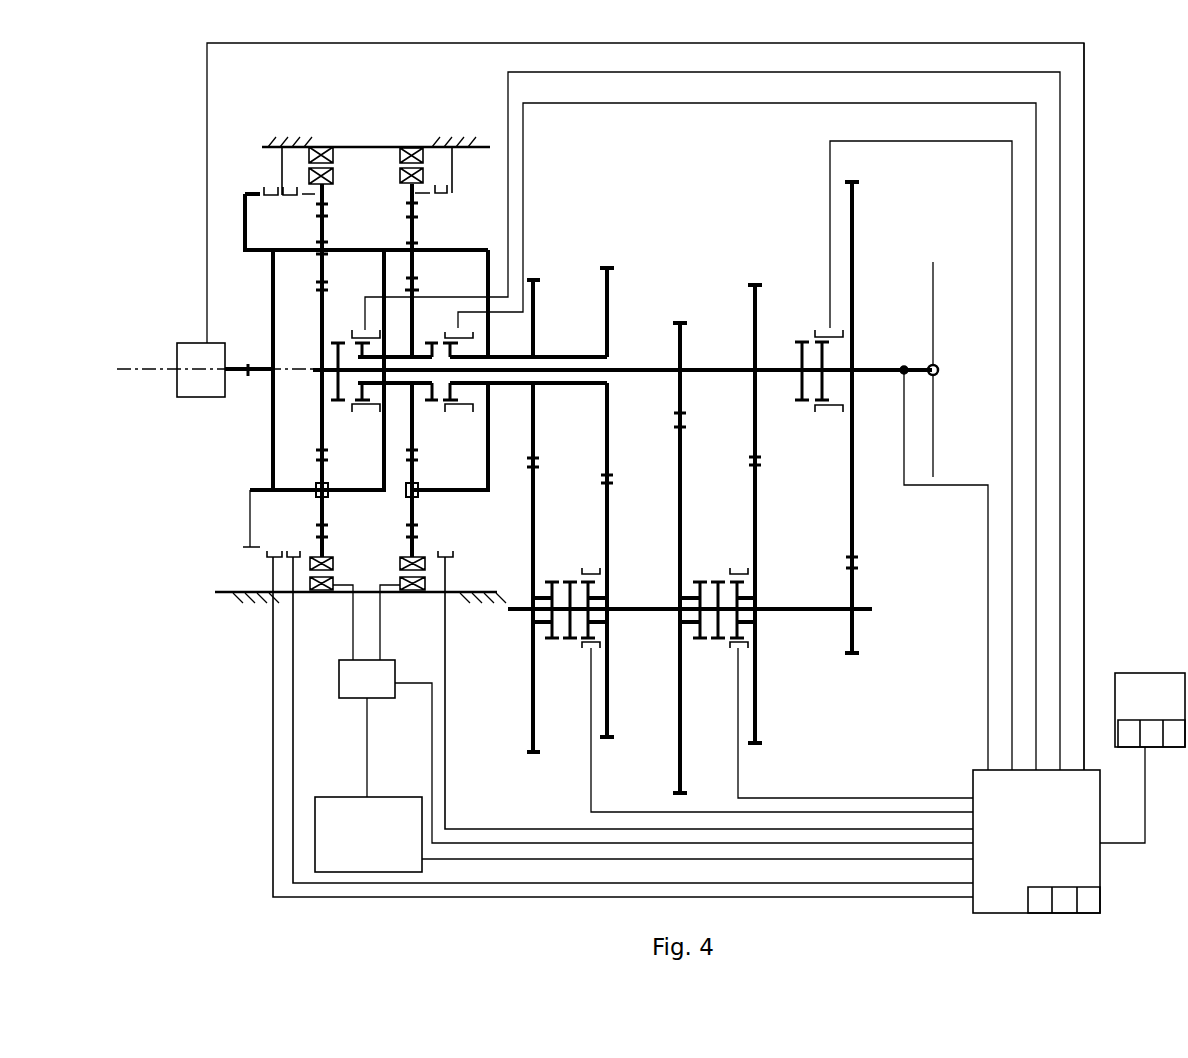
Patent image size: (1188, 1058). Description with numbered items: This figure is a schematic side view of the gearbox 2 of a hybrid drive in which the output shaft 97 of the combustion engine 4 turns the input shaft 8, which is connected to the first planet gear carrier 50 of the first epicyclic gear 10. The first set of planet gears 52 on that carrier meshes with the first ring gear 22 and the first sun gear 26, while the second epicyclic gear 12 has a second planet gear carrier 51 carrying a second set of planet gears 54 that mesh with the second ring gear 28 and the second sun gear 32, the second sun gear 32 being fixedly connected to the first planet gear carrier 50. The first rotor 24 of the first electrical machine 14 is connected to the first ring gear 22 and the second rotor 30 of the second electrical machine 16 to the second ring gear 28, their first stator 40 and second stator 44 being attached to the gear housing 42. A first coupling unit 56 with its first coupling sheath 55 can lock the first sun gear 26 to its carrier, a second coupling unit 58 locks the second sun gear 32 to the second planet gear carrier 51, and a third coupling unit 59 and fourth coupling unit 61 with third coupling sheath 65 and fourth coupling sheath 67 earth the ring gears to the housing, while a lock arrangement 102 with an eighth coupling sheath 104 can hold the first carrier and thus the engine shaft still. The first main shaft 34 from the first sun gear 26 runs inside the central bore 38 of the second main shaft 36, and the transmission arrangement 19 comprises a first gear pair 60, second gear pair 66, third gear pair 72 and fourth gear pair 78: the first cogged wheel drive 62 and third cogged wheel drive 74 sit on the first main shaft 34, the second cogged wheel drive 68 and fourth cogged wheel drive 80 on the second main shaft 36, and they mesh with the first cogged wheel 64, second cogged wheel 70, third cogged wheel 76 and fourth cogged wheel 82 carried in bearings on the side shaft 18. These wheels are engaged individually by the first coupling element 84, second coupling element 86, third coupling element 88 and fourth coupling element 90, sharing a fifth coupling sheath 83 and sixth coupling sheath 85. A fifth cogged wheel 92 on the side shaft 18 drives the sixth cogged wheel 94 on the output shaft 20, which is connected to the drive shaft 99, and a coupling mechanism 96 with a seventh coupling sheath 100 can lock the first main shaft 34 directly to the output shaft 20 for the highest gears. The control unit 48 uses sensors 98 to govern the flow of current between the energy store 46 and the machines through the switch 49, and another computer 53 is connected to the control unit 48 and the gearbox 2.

The gearbox 2 is at (1095, 128).
The combustion engine 4 is at (187, 343).
The input shaft 8 is at (262, 365).
The first epicyclic gear 10 is at (197, 205).
The second epicyclic gear 12 is at (528, 190).
The first electrical machine 14 is at (198, 128).
The second electrical machine 16 is at (480, 170).
The side shaft 18 is at (808, 600).
The transmission arrangement 19 is at (678, 207).
The output shaft 20 is at (878, 368).
The first ring gear 22 is at (313, 385).
The first rotor 24 is at (335, 160).
The first sun gear 26 is at (322, 396).
The second ring gear 28 is at (418, 210).
The second rotor 30 is at (398, 158).
The second sun gear 32 is at (443, 322).
The first main shaft 34 is at (720, 367).
The second main shaft 36 is at (522, 387).
The central bore 38 is at (632, 367).
The first stator 40 is at (295, 148).
The gear housing 42 is at (395, 147).
The second stator 44 is at (435, 147).
The energy store 46 is at (395, 797).
The control unit 48 is at (972, 782).
The switch 49 is at (355, 700).
The first planet gear carrier 50 is at (273, 262).
The second planet gear carrier 51 is at (490, 462).
The first set of planet gears 52 is at (328, 265).
The computer 53 is at (1155, 673).
The second set of planet gears 54 is at (418, 268).
The first coupling sheath 55 is at (368, 413).
The first coupling unit 56 is at (345, 338).
The second coupling unit 58 is at (458, 347).
The third coupling unit 59 is at (320, 540).
The first gear pair 60 is at (678, 307).
The fourth coupling unit 61 is at (430, 545).
The first cogged wheel drive 62 is at (683, 402).
The first cogged wheel 64 is at (683, 473).
The third coupling sheath 65 is at (292, 548).
The second gear pair 66 is at (607, 248).
The fourth coupling sheath 67 is at (455, 553).
The second cogged wheel drive 68 is at (608, 413).
The second cogged wheel 70 is at (608, 517).
The third gear pair 72 is at (755, 255).
The third cogged wheel drive 74 is at (757, 395).
The third cogged wheel 76 is at (757, 523).
The fourth gear pair 78 is at (537, 258).
The fourth cogged wheel drive 80 is at (535, 408).
The fourth cogged wheel 82 is at (535, 547).
The fifth coupling sheath 83 is at (745, 573).
The first coupling element 84 is at (702, 647).
The sixth coupling sheath 85 is at (595, 573).
The second coupling element 86 is at (595, 643).
The third coupling element 88 is at (743, 633).
The fourth coupling element 90 is at (552, 643).
The fifth cogged wheel 92 is at (855, 625).
The sixth cogged wheel 94 is at (852, 475).
The coupling mechanism 96 is at (795, 313).
The output shaft of the combustion engine 97 is at (240, 372).
The sensors 98 is at (905, 367).
The drive shaft 99 is at (933, 313).
The seventh coupling sheath 100 is at (833, 410).
The lock arrangement 102 is at (245, 555).
The eighth coupling sheath 104 is at (270, 560).